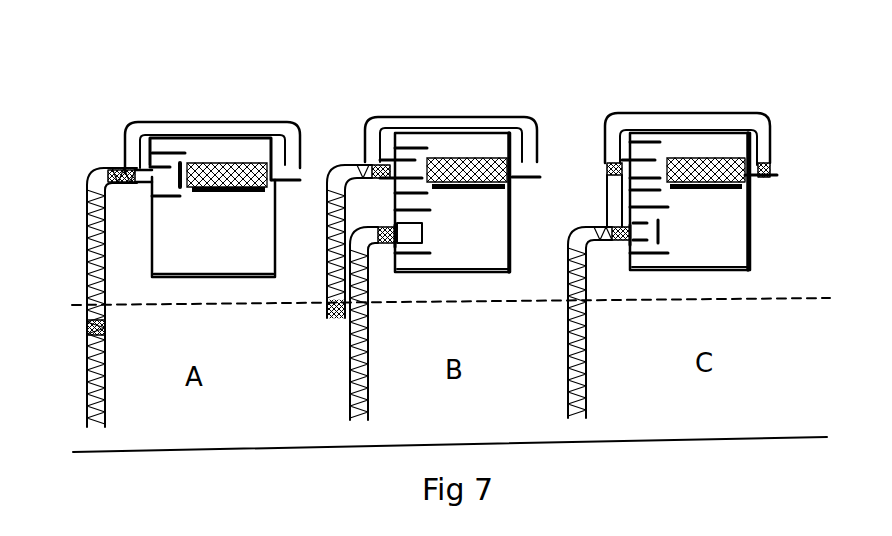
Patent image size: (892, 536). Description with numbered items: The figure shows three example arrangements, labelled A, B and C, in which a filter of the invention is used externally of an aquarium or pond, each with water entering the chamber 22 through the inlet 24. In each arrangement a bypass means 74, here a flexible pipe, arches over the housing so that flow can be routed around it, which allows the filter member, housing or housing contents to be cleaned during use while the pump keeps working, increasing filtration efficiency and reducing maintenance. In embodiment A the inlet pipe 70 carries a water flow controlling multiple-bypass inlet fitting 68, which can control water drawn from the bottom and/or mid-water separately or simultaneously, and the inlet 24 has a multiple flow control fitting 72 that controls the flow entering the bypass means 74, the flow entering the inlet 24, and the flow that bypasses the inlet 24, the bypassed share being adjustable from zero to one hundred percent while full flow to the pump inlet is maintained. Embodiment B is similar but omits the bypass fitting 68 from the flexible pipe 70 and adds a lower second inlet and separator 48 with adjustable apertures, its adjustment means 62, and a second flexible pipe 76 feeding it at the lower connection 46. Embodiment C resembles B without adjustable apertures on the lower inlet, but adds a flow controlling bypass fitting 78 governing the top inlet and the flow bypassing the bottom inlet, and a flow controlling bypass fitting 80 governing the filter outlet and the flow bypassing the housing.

The chamber 22 is at (165, 178).
The inlet 24 is at (150, 178).
The outlet 46 is at (390, 247).
The lower second inlet and separator 48 is at (422, 233).
The adjustment means 62 is at (390, 224).
The multiple-bypass inlet fitting 68 is at (108, 328).
The inlet pipe 70 is at (87, 212).
The multiple flow control fitting 72 is at (128, 170).
The bypass means 74 is at (260, 121).
The flexible pipe 76 is at (368, 352).
The flow controlling bypass fitting 78 is at (612, 168).
The flow controlling bypass fitting 80 is at (770, 160).